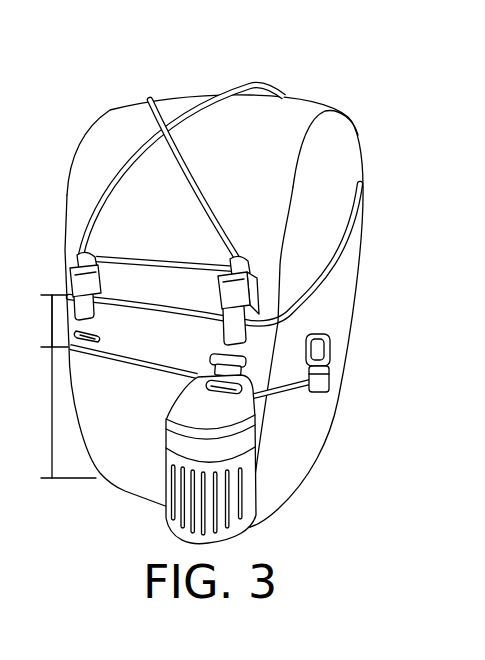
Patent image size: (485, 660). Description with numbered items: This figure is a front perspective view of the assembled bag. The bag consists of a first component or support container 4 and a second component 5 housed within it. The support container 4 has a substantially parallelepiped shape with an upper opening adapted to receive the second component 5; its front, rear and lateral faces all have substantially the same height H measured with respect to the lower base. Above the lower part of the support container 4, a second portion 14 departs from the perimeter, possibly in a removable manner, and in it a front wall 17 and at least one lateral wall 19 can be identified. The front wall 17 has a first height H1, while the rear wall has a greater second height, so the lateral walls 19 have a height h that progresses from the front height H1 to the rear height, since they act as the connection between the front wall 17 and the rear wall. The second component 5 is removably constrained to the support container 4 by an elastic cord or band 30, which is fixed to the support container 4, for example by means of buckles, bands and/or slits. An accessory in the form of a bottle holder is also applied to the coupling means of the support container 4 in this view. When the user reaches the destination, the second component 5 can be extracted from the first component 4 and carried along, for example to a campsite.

The first component or support container 4 is at (351, 395).
The second component 5 is at (347, 143).
The second portion 14 is at (349, 306).
The front wall 17 is at (174, 350).
The lateral wall 19 is at (340, 288).
The elastic cord or band 30 is at (250, 81).
The height of the lateral walls h is at (309, 337).
The height of the support container faces H is at (50, 408).
The first height of the front wall H1 is at (50, 320).